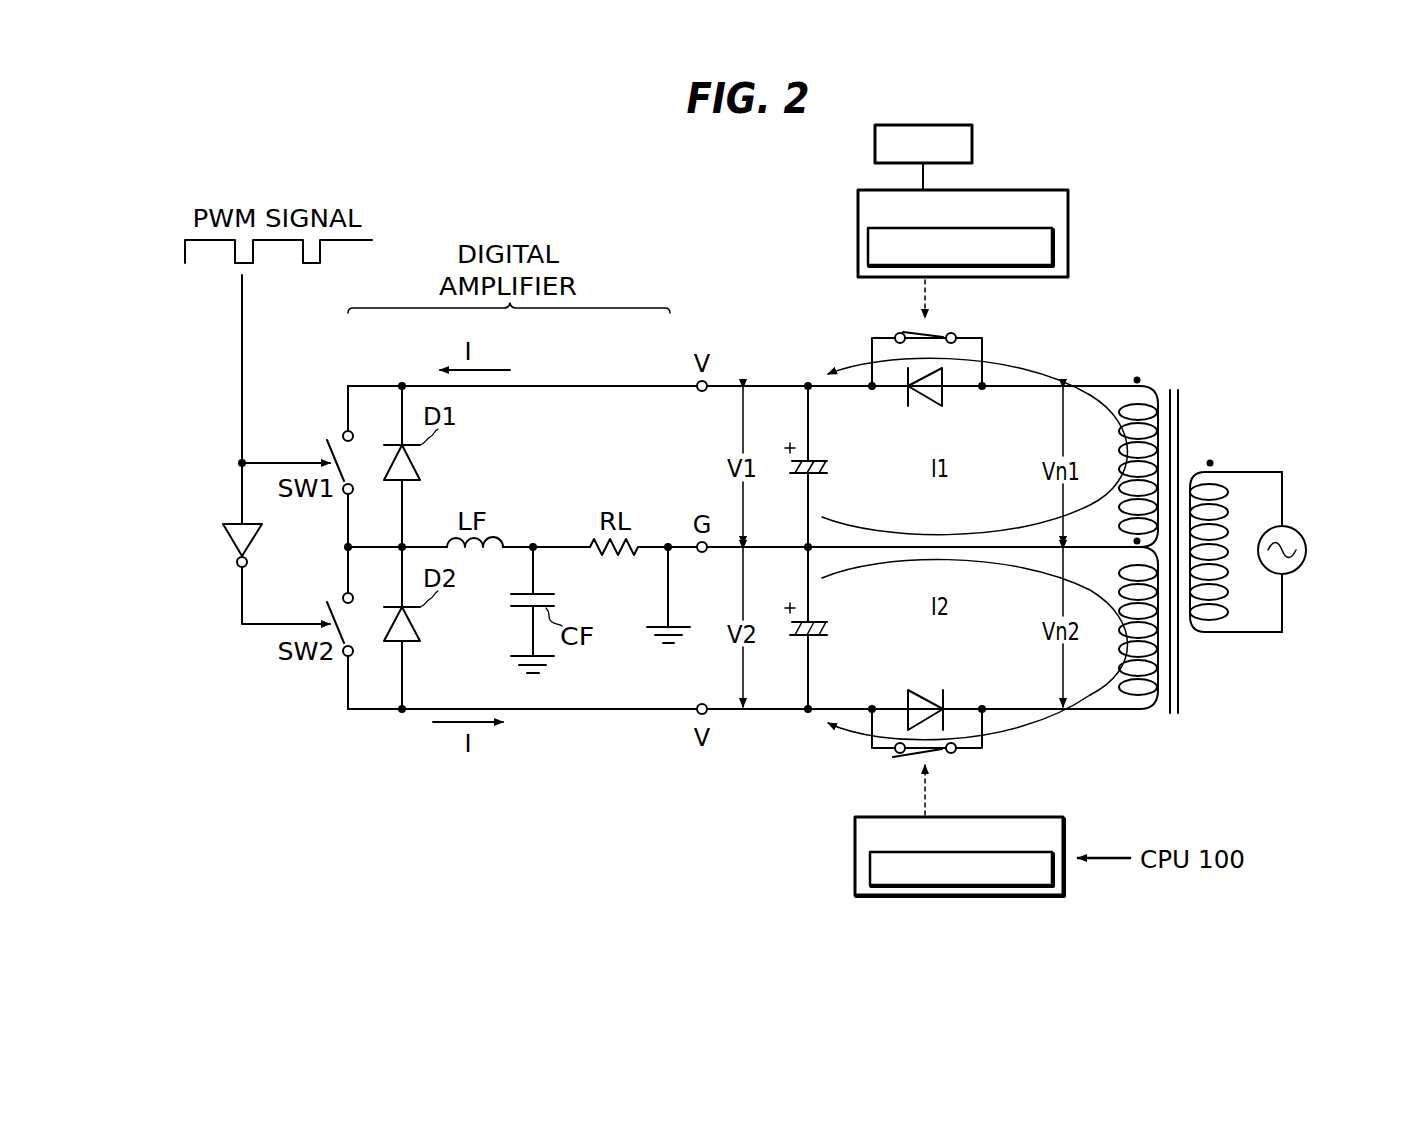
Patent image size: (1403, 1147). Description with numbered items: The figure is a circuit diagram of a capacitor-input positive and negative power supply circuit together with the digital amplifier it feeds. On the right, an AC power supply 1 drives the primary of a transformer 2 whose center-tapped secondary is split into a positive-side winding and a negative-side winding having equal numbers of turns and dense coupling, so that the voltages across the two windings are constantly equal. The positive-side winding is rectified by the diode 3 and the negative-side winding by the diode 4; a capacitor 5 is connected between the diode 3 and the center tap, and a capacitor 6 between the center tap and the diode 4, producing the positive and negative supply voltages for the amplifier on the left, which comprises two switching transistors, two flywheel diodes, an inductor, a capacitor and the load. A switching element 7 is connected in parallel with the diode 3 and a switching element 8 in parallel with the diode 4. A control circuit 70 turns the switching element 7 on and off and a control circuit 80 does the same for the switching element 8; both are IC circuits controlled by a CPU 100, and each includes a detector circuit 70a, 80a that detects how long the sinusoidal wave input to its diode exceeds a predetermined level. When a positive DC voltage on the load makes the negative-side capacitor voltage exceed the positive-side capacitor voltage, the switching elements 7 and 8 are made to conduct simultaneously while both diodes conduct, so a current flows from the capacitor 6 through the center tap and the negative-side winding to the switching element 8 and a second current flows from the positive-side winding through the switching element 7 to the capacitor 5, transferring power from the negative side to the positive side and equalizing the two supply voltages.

The AC power supply 1 is at (1300, 536).
The transformer 2 is at (1172, 384).
The rectifier device 3 is at (926, 396).
The rectifier device 4 is at (927, 698).
The capacitor 5 is at (823, 460).
The capacitor 6 is at (822, 636).
The switching element 7 is at (946, 332).
The switching element 8 is at (945, 750).
The control circuit 70 is at (1070, 205).
The detector circuit 70a is at (1054, 240).
The control circuit 80 is at (855, 854).
The detector circuit 80a is at (1010, 886).
The CPU 100 is at (974, 143).